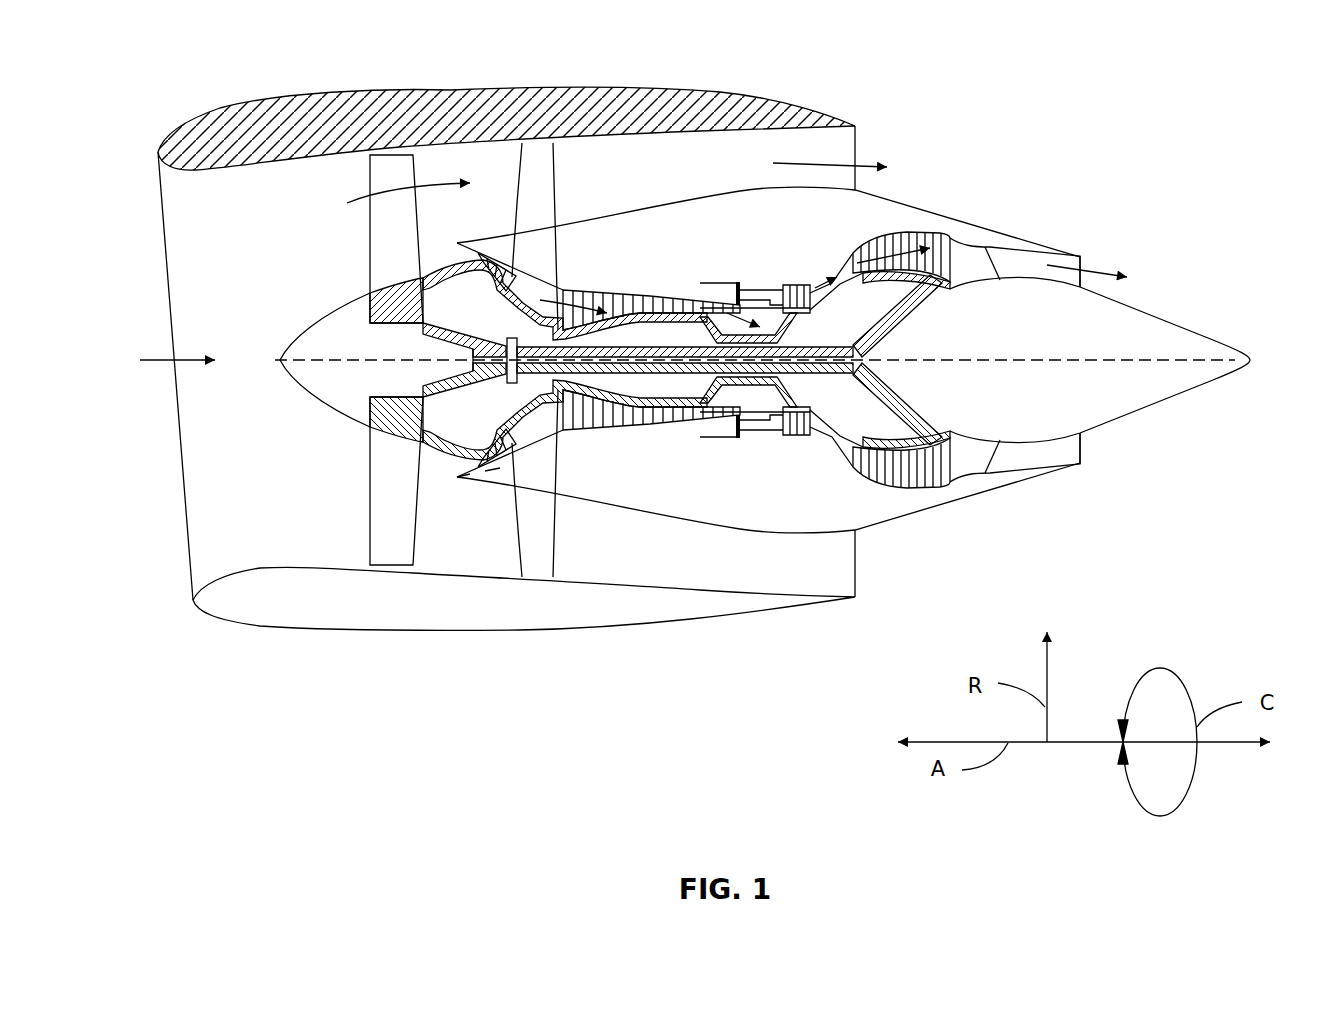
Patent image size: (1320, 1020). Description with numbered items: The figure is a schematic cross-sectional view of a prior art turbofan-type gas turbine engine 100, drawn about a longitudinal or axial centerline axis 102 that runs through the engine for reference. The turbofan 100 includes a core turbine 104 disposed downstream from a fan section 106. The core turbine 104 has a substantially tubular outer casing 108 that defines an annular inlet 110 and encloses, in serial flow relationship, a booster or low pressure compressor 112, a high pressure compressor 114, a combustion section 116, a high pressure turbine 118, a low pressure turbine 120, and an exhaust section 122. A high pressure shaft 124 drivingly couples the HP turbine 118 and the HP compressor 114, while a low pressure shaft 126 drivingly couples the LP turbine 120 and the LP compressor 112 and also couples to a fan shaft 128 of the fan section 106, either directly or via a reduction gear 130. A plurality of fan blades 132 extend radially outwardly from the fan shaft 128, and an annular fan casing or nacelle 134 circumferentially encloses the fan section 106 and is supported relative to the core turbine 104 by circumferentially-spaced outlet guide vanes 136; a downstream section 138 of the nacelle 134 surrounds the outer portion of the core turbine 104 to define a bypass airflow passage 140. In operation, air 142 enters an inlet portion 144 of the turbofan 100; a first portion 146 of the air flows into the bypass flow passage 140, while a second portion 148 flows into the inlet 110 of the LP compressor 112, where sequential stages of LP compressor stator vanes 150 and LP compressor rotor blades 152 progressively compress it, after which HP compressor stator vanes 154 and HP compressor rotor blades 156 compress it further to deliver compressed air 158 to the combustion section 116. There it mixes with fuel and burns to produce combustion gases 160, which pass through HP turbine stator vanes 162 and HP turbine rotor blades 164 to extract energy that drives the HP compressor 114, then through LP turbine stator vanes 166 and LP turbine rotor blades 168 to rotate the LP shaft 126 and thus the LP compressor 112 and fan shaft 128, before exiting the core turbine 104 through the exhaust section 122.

The turbofan-type gas turbine engine 100 is at (993, 102).
The longitudinal or axial centerline axis 102 is at (1003, 360).
The core turbine or gas turbine engine 104 is at (683, 235).
The fan section 106 is at (290, 225).
The outer casing 108 is at (703, 523).
The annular inlet 110 is at (470, 465).
The booster or low pressure compressor 112 is at (512, 452).
The high pressure compressor 114 is at (593, 430).
The combustion section 116 is at (760, 433).
The high pressure turbine 118 is at (820, 423).
The low pressure turbine 120 is at (937, 490).
The exhaust section 122 is at (1085, 258).
The high pressure shaft or spool 124 is at (780, 325).
The low pressure shaft or spool 126 is at (523, 338).
The fan spool or shaft 128 is at (423, 323).
The reduction gear 130 is at (537, 420).
The fan blades 132 is at (370, 498).
The annular fan casing or nacelle 134 is at (410, 631).
The outlet guide vanes 136 is at (558, 183).
The downstream section of the nacelle 138 is at (763, 105).
The bypass airflow passage 140 is at (663, 175).
The air 142 is at (190, 358).
The inlet portion 144 is at (192, 570).
The first portion of the air 146 is at (387, 190).
The second portion of the air 148 is at (457, 250).
The LP compressor stator vanes 150 is at (487, 475).
The LP compressor rotor blades 152 is at (493, 473).
The HP compressor stator vanes 154 is at (683, 420).
The HP compressor rotor blades 156 is at (693, 420).
The compressed air 158 is at (720, 305).
The combustion gases 160 is at (807, 307).
The HP turbine stator vanes 162 is at (787, 425).
The HP turbine rotor blades 164 is at (800, 427).
The LP turbine stator vanes 166 is at (876, 272).
The LP turbine rotor blades 168 is at (870, 235).